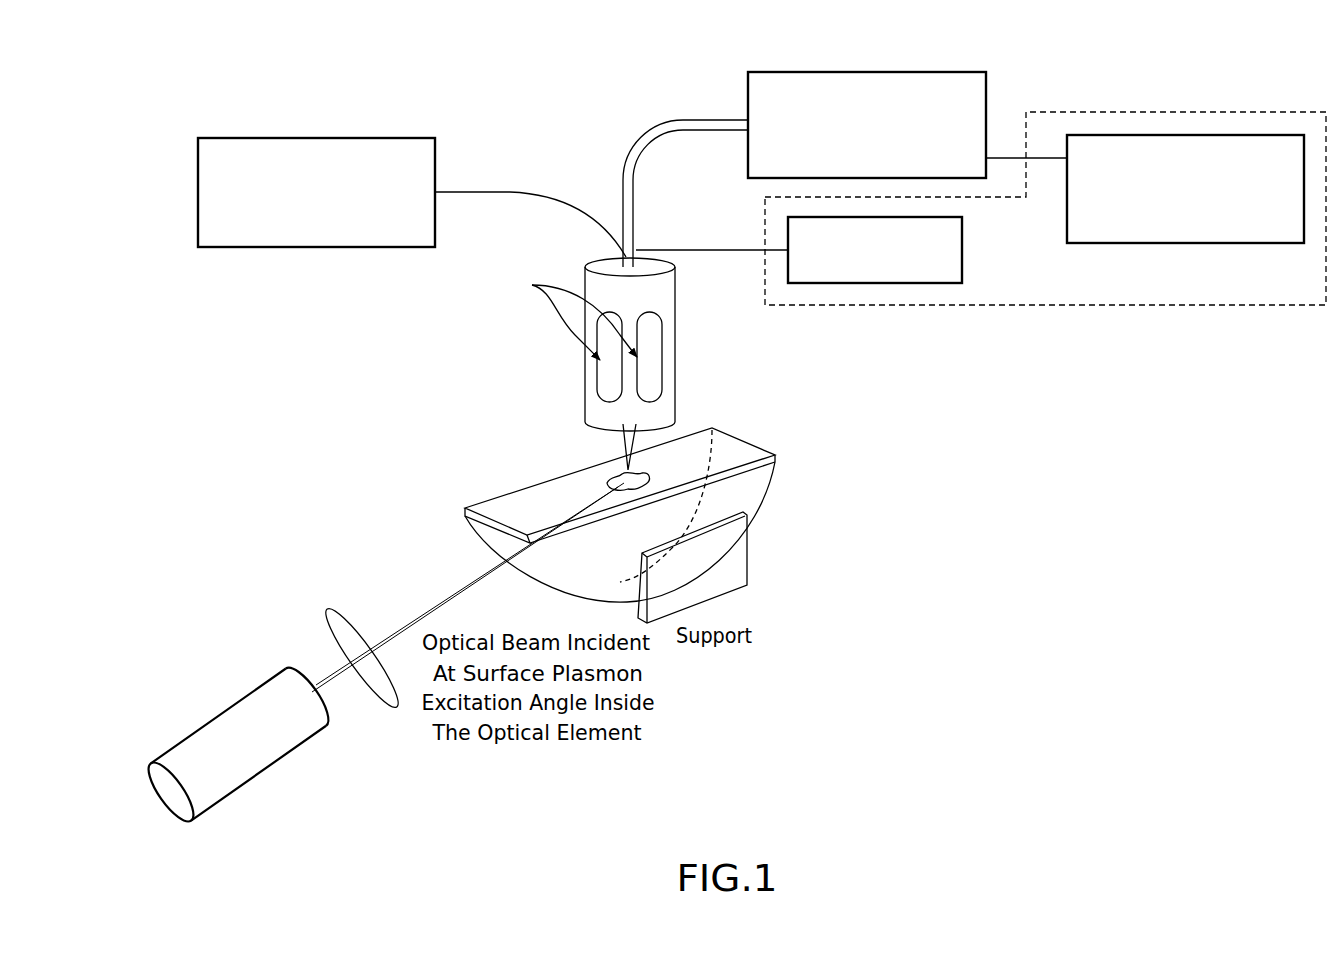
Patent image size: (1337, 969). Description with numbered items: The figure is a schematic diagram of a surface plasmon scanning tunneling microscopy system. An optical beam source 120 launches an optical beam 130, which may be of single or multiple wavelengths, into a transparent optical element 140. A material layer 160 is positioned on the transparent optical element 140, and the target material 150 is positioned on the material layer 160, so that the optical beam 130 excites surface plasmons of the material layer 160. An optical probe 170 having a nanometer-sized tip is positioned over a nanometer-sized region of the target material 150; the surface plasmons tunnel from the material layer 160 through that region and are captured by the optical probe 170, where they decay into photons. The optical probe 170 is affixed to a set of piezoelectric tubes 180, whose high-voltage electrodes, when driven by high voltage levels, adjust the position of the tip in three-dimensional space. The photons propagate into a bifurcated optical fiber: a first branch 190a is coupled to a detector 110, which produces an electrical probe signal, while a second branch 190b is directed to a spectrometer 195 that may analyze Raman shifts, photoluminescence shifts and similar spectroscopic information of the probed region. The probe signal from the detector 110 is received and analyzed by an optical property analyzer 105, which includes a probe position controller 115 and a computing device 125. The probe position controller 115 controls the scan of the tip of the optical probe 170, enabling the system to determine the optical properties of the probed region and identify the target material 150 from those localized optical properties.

The optical property analyzer 105 is at (1043, 305).
The detector 110 is at (986, 103).
The probe position controller 115 is at (962, 250).
The optical beam source 120 is at (260, 773).
The computing device 125 is at (1185, 135).
The optical beam 130 is at (397, 630).
The transparent optical element 140 is at (465, 537).
The target material 150 is at (614, 469).
The material layer 160 is at (786, 457).
The optical probe 170 is at (652, 439).
The piezoelectric tubes 180 is at (675, 357).
The first branch of optical fiber 190a is at (633, 224).
The second branch of optical fiber 190b is at (511, 193).
The spectrometer 195 is at (198, 192).